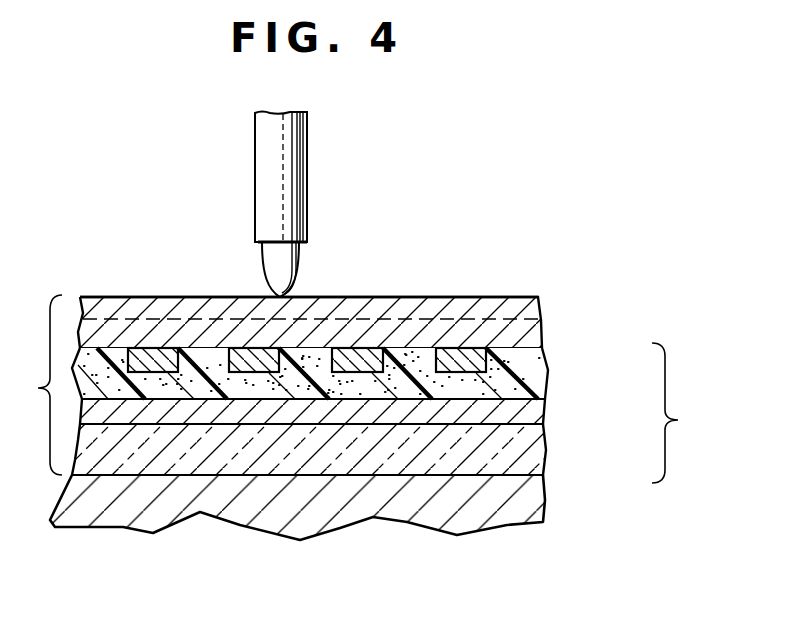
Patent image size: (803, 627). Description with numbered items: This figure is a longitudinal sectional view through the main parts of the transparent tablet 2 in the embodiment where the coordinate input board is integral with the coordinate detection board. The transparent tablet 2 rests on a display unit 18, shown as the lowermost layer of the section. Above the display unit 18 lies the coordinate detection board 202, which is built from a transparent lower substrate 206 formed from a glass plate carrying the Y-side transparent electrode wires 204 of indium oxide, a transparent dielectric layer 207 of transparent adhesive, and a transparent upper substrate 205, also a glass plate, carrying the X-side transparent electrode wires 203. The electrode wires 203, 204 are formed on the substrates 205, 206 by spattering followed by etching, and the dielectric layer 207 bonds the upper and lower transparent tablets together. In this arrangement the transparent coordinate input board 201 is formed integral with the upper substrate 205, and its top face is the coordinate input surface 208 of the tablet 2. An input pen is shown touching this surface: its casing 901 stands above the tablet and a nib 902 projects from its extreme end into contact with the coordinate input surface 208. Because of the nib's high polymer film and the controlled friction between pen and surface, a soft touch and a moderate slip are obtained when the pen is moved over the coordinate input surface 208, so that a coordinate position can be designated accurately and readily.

The transparent tablet 2 is at (39, 385).
The display unit 18 is at (437, 513).
The transparent coordinate input board 201 is at (543, 307).
The coordinate detection board 202 is at (697, 413).
The X-side transparent electrode wire 203 is at (155, 352).
The Y-side transparent electrode wire 204 is at (525, 413).
The transparent upper substrate 205 is at (128, 338).
The transparent lower substrate 206 is at (530, 462).
The transparent dielectric layer 207 is at (525, 373).
The coordinate input surface 208 is at (458, 296).
The casing 901 is at (300, 150).
The nib 902 is at (300, 261).